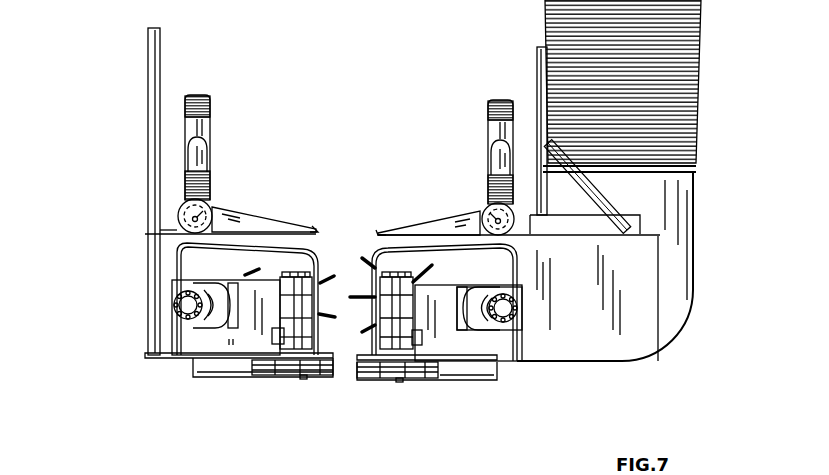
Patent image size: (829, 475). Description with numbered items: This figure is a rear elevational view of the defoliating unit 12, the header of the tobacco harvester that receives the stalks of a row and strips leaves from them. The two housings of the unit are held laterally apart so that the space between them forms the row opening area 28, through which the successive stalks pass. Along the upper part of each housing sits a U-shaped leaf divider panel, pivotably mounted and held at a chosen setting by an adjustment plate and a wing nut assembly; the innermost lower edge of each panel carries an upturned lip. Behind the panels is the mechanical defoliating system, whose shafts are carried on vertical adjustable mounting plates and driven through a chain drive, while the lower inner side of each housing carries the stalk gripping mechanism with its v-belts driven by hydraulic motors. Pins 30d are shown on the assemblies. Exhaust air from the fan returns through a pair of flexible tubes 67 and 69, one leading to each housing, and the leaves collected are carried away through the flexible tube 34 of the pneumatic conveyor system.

The defoliating unit 12 is at (128, 283).
The row opening area 28 is at (344, 388).
The pins 30d is at (364, 260).
The flexible tube 34 is at (678, 105).
The flexible tube 67 is at (488, 113).
The flexible tube 69 is at (213, 100).